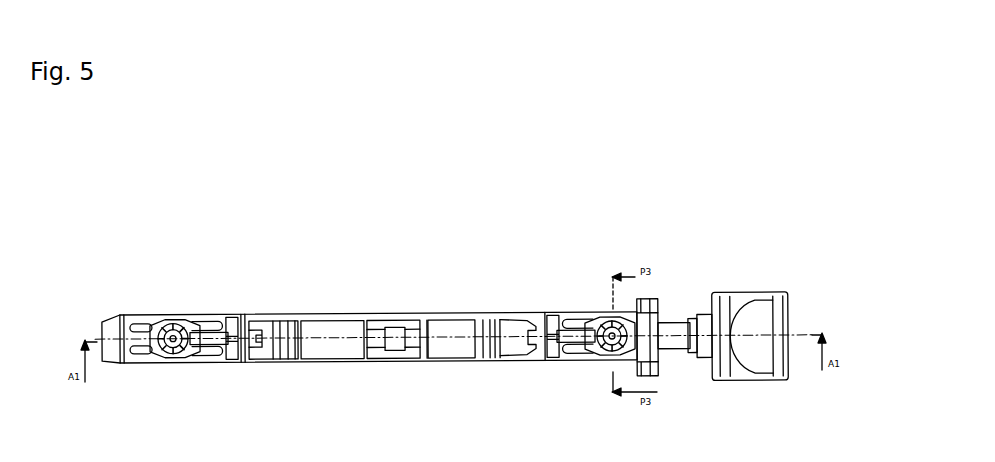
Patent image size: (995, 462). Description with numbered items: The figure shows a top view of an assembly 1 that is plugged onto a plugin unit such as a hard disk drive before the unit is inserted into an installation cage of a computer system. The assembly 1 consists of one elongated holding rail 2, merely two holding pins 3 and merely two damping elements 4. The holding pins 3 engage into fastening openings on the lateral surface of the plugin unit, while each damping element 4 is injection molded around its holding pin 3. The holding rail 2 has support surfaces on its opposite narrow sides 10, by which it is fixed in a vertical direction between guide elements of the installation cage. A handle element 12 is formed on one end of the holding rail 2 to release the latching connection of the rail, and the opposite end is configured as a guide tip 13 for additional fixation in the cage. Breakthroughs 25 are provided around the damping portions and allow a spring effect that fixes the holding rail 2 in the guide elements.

The assembly 1 is at (766, 161).
The holding rail 2 is at (355, 362).
The holding pin 3 is at (178, 320).
The damping element 4 is at (162, 320).
The narrow sides 10 is at (333, 313).
The handle element 12 is at (747, 391).
The guide tip 13 is at (108, 360).
The breakthroughs 25 is at (208, 324).